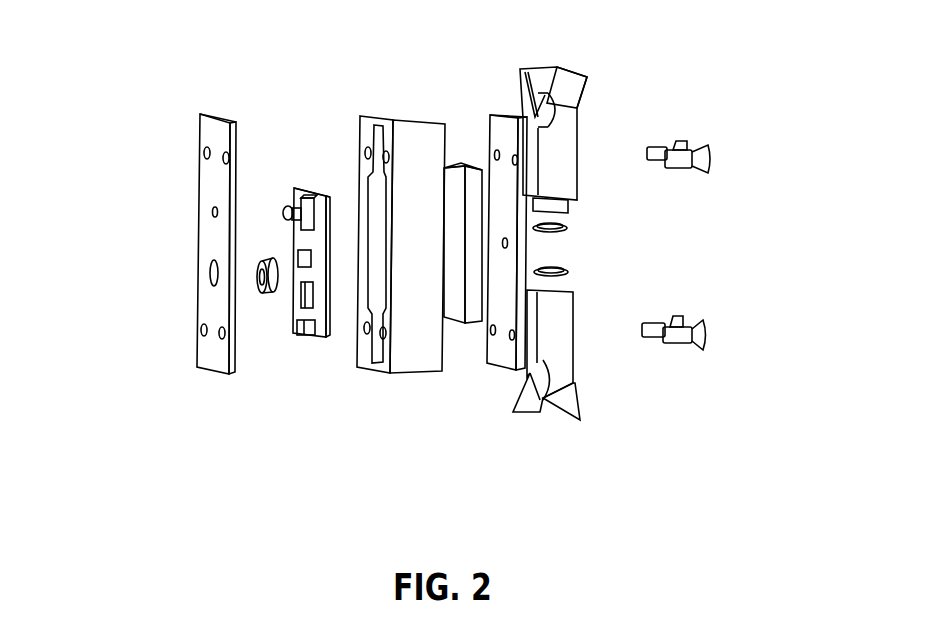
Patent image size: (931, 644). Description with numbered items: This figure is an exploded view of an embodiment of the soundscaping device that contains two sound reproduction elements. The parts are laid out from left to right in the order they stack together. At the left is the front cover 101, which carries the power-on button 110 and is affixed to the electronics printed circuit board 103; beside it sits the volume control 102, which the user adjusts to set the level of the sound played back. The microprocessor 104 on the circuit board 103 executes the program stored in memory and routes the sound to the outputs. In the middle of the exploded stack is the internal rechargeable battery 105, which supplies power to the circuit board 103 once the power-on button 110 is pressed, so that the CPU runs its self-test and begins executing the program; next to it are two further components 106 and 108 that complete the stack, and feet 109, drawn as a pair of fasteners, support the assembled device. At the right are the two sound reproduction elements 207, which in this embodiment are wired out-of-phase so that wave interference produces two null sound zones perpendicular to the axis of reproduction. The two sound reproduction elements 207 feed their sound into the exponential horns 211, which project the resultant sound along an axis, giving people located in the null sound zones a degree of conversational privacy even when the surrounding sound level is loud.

The front cover 101 is at (198, 225).
The volume control 102 is at (263, 294).
The electronics printed circuit board 103 is at (315, 190).
The microprocessor 104 is at (313, 310).
The internal rechargeable battery 105 is at (400, 110).
The insert block 106 is at (467, 166).
The cover plate 108 is at (507, 157).
The feet 109 is at (710, 157).
The power-on button 110 is at (287, 205).
The sound reproduction elements 207 is at (578, 233).
The exponential horns 211 is at (578, 140).